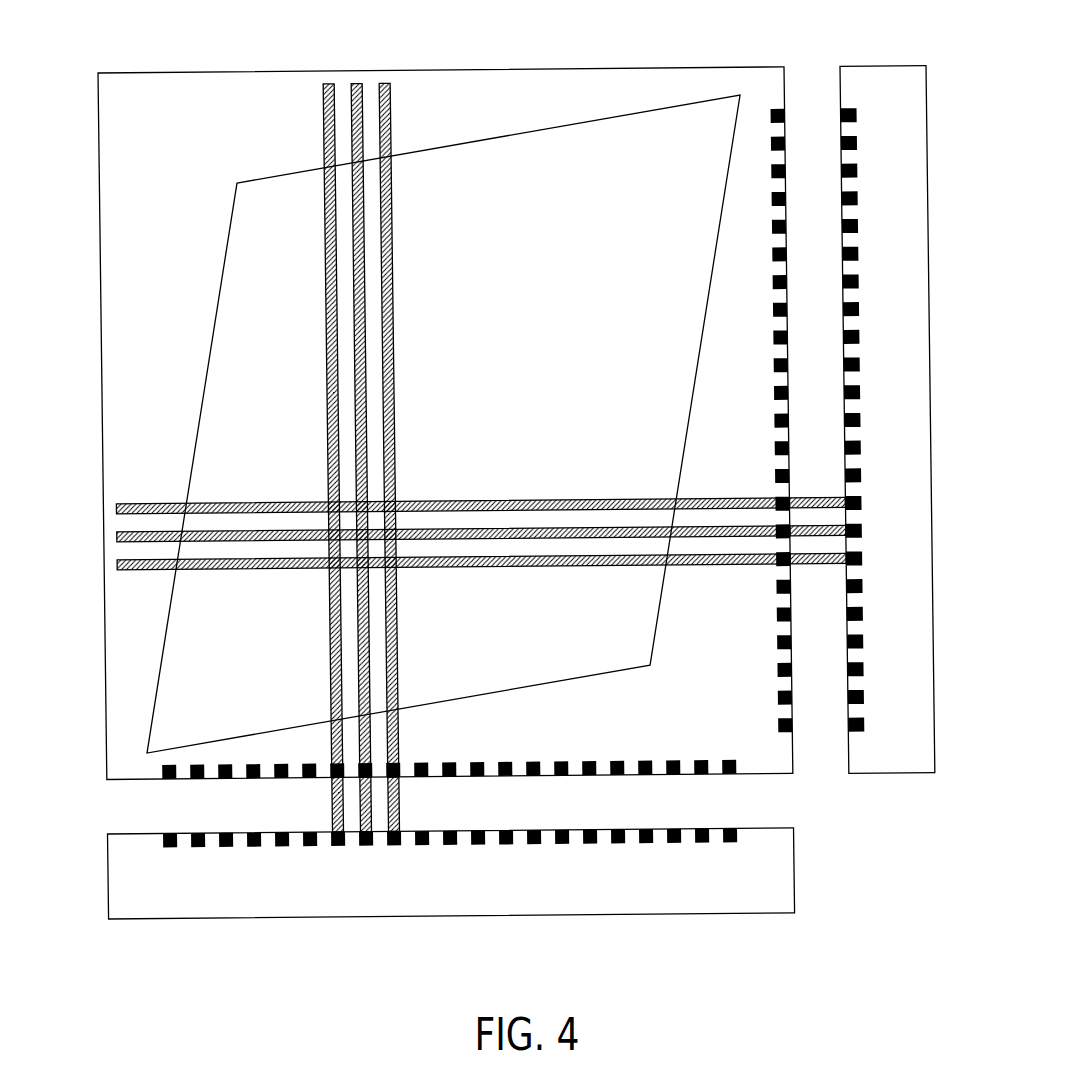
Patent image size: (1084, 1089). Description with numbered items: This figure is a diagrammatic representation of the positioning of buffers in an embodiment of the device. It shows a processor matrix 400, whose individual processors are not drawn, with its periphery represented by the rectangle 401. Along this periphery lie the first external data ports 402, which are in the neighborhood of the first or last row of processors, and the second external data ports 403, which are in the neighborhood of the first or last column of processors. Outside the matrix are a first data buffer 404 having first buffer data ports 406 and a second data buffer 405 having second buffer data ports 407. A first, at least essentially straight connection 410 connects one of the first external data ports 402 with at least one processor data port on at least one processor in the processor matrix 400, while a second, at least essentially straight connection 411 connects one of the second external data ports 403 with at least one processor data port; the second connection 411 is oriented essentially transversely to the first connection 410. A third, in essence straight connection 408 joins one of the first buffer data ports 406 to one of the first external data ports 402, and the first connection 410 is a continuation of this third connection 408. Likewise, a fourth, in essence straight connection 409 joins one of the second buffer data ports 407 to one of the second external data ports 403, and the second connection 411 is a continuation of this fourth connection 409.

The processor matrix 400 is at (657, 128).
The rectangle 401 is at (548, 74).
The first external data ports 402 is at (186, 781).
The second external data ports 403 is at (761, 573).
The first data buffer 404 is at (559, 921).
The second data buffer 405 is at (889, 782).
The first buffer data ports 406 is at (186, 849).
The second buffer data ports 407 is at (831, 574).
The third connection 408 is at (390, 816).
The fourth connection 409 is at (829, 560).
The first connection 410 is at (390, 746).
The second connection 411 is at (723, 504).